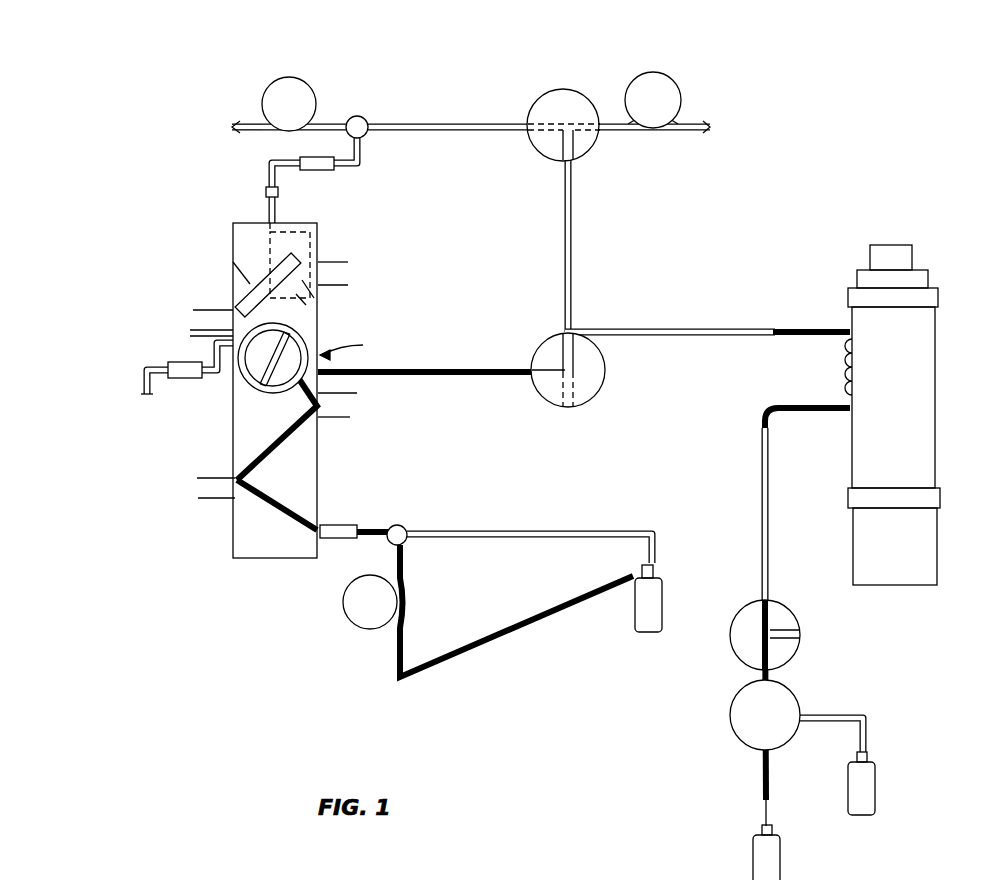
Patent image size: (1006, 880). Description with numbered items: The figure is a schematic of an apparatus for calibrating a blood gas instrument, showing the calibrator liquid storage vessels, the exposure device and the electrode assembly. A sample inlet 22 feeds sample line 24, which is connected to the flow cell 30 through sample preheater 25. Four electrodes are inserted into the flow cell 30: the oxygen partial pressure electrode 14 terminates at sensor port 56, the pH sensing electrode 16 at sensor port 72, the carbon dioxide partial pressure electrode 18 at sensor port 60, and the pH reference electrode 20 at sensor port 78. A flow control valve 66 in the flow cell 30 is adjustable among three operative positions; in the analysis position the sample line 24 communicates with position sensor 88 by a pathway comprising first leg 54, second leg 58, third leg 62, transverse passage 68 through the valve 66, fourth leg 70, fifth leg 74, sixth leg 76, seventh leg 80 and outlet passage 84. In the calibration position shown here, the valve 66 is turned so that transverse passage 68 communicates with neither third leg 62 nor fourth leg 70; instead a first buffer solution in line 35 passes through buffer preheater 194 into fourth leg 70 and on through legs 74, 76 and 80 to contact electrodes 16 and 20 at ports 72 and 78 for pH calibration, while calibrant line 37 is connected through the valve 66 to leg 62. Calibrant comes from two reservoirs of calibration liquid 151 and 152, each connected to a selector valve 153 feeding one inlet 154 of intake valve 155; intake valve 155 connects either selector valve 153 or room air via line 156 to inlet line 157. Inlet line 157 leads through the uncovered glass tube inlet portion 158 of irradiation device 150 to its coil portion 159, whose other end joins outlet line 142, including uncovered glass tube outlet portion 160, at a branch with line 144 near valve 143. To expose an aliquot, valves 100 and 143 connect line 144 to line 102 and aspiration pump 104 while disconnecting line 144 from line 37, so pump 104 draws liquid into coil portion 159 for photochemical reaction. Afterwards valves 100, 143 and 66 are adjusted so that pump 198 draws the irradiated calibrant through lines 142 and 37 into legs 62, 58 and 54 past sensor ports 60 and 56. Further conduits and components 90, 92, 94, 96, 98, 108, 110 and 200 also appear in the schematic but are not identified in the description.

The pO2 electrode 14 is at (196, 494).
The pH sensing electrode 16 is at (193, 320).
The pCO2 electrode 18 is at (347, 400).
The pH reference electrode 20 is at (326, 298).
The sample inlet 22 is at (656, 566).
The sample line 24 is at (532, 530).
The sample preheater 25 is at (336, 540).
The flow cell 30 is at (231, 226).
The buffer line 35 is at (142, 367).
The calibrant line 37 is at (460, 368).
The first leg 54 is at (284, 512).
The sensor port 56 is at (233, 479).
The second leg 58 is at (312, 446).
The sensor port 60 is at (334, 420).
The third leg 62 is at (348, 393).
The flow control valve 66 is at (356, 345).
The transverse passage 68 is at (262, 386).
The fourth leg 70 is at (190, 334).
The sensor port 72 is at (228, 310).
The fifth leg 74 is at (232, 266).
The sixth leg 76 is at (334, 260).
The sensor port 78 is at (346, 286).
The seventh leg 80 is at (305, 324).
The outlet passage 84 is at (313, 223).
The position sensor 88 is at (266, 192).
The conduit 90 is at (270, 166).
The filter 92 is at (322, 170).
The conduit 94 is at (362, 174).
The valve 96 is at (360, 118).
The conduit 98 is at (454, 122).
The valve 100 is at (560, 100).
The line 102 is at (610, 124).
The aspiration pump 104 is at (674, 94).
The pump 108 is at (298, 92).
The conduit 110 is at (246, 124).
The outlet line 142 is at (660, 330).
The valve 143 is at (606, 374).
The line 144 is at (574, 243).
The irradiation device 150 is at (932, 330).
The reservoir of calibration liquid 151 is at (772, 860).
The reservoir of calibration liquid 152 is at (866, 792).
The selector valve 153 is at (790, 706).
The inlet 154 is at (778, 676).
The intake valve 155 is at (778, 610).
The line 156 is at (788, 634).
The inlet line 157 is at (771, 518).
The uncovered glass tube inlet portion 158 is at (820, 412).
The coil portion 159 is at (840, 360).
The uncovered glass tube outlet portion 160 is at (797, 328).
The buffer preheater 194 is at (186, 378).
The pump 198 is at (354, 612).
The valve 200 is at (406, 526).